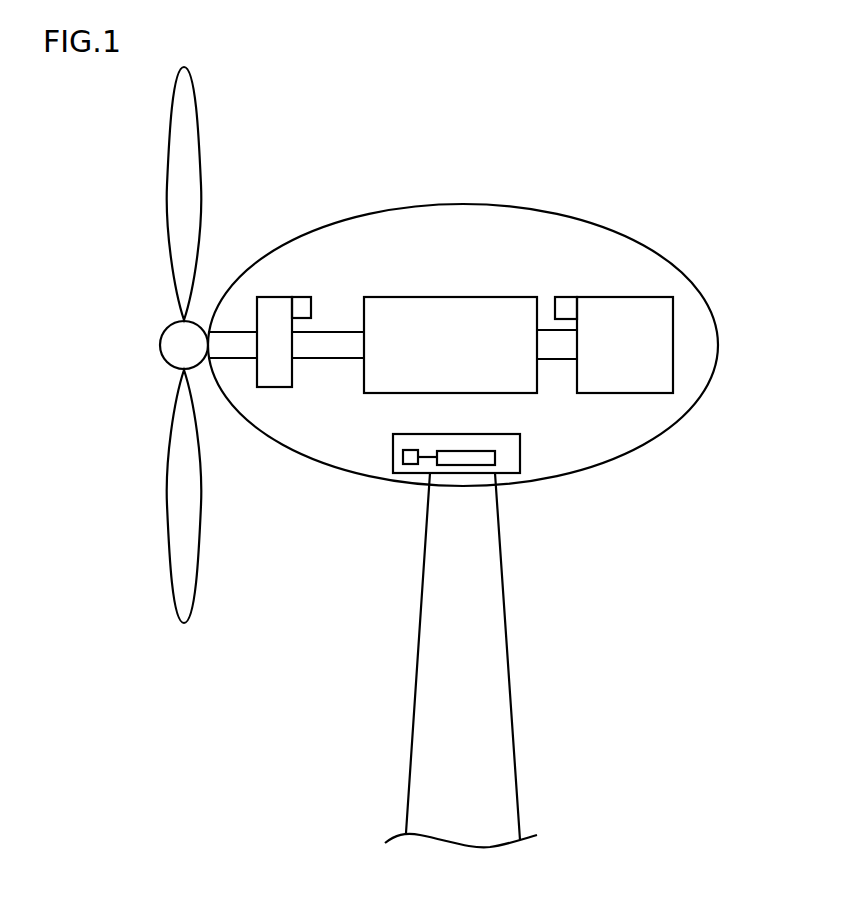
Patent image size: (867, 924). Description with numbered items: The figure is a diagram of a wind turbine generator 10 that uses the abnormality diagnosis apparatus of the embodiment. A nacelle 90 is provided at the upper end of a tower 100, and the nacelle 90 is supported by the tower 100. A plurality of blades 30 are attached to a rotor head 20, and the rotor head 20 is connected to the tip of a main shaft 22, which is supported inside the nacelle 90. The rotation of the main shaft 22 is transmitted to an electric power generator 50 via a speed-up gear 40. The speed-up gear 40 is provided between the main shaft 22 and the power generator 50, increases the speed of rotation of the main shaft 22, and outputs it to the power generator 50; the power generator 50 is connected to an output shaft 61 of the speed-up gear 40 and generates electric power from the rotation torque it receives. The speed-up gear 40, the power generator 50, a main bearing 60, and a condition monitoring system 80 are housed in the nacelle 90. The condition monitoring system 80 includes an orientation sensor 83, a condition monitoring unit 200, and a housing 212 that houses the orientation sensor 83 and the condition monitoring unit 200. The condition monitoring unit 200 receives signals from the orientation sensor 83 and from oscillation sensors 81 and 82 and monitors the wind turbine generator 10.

The wind turbine generator 10 is at (683, 128).
The rotor head 20 is at (168, 349).
The main shaft 22 is at (235, 345).
The blades 30 is at (183, 120).
The speed-up gear 40 is at (390, 320).
The electric power generator 50 is at (623, 320).
The main bearing 60 is at (274, 322).
The output shaft 61 is at (548, 345).
The condition monitoring system 80 is at (514, 484).
The oscillation sensor 81 is at (557, 308).
The oscillation sensor 82 is at (311, 306).
The orientation sensor 83 is at (411, 474).
The nacelle 90 is at (705, 296).
The tower 100 is at (487, 690).
The condition monitoring unit 200 is at (476, 466).
The housing 212 is at (522, 468).